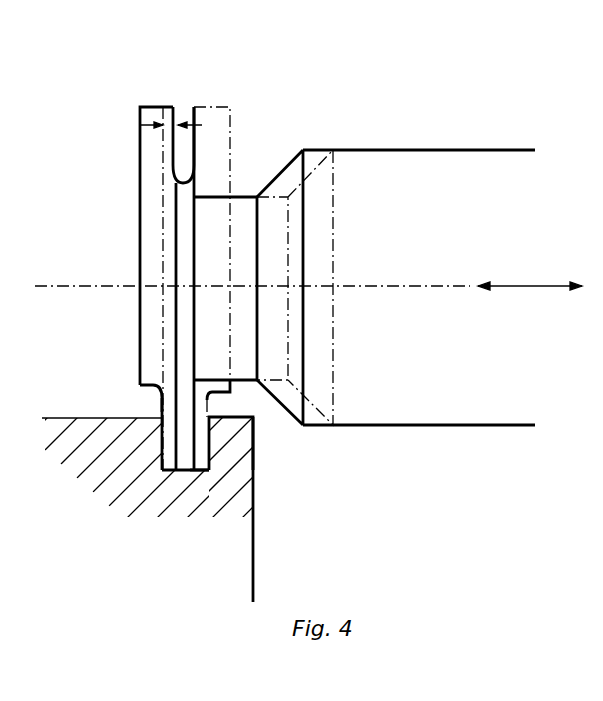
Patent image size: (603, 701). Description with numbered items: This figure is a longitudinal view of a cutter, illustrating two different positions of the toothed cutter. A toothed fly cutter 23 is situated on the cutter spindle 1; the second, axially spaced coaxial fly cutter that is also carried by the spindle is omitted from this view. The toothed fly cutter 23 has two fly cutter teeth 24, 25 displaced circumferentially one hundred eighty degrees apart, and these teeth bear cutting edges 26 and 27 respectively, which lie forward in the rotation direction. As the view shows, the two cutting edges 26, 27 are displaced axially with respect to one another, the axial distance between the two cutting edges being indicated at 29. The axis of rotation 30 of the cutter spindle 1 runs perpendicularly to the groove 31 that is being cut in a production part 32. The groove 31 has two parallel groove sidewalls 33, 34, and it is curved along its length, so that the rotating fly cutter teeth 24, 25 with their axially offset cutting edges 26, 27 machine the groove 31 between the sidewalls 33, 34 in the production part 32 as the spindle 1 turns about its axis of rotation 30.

The cutter spindle 1 is at (475, 185).
The toothed fly cutter 23 is at (148, 280).
The fly cutter tooth 24 is at (152, 160).
The fly cutter tooth 25 is at (165, 400).
The cutting edge 26 is at (165, 410).
The cutting edge 27 is at (178, 108).
The axial distance 29 is at (168, 110).
The axis of rotation 30 is at (450, 283).
The groove 31 is at (208, 470).
The production part 32 is at (240, 568).
The groove sidewall 33 is at (163, 433).
The groove sidewall 34 is at (213, 447).